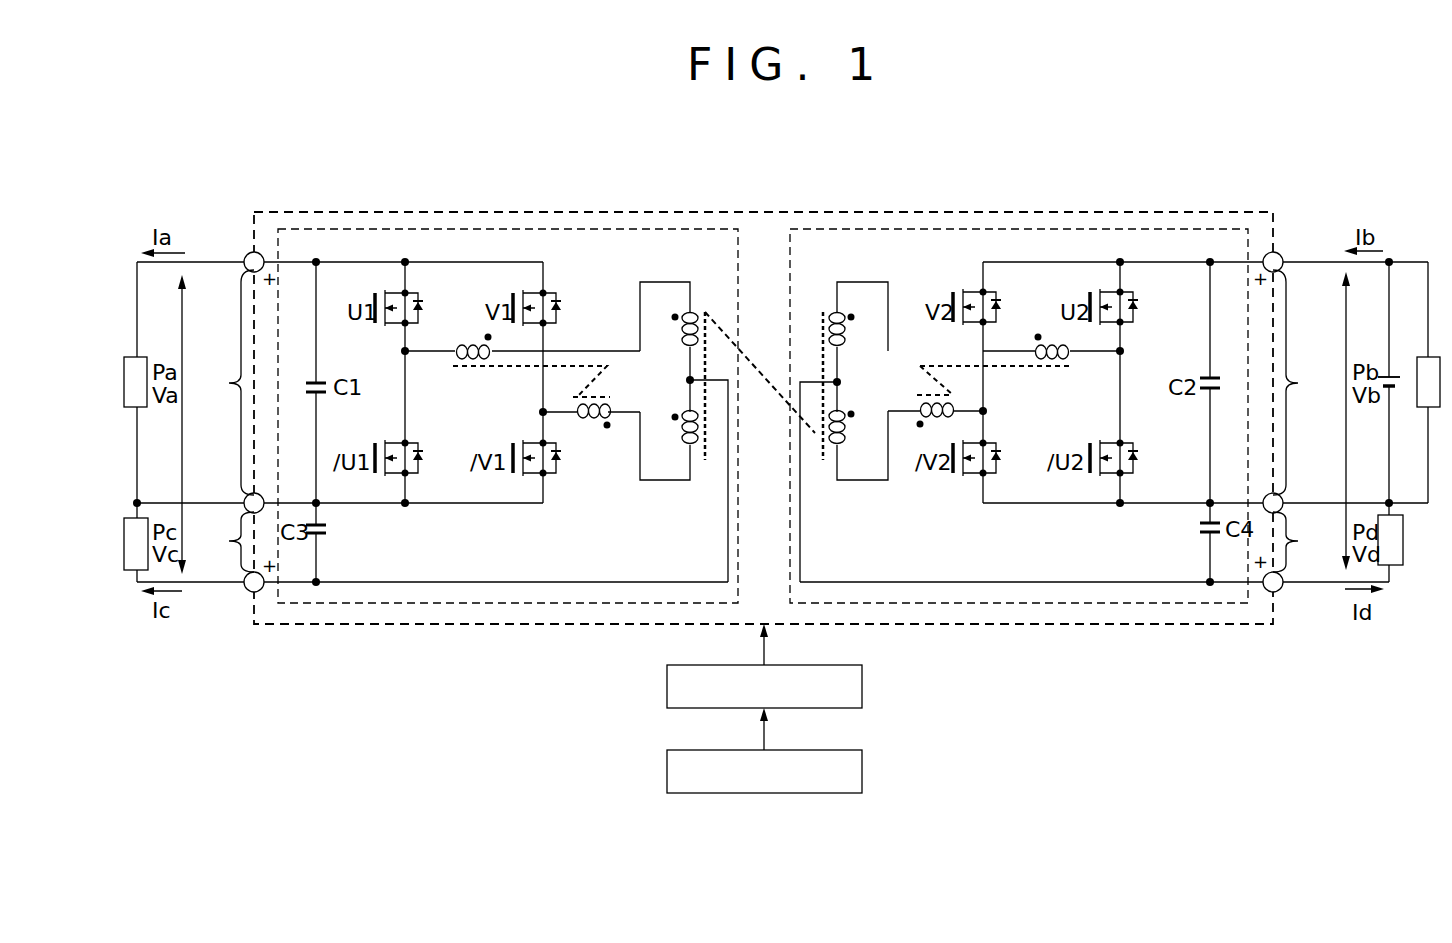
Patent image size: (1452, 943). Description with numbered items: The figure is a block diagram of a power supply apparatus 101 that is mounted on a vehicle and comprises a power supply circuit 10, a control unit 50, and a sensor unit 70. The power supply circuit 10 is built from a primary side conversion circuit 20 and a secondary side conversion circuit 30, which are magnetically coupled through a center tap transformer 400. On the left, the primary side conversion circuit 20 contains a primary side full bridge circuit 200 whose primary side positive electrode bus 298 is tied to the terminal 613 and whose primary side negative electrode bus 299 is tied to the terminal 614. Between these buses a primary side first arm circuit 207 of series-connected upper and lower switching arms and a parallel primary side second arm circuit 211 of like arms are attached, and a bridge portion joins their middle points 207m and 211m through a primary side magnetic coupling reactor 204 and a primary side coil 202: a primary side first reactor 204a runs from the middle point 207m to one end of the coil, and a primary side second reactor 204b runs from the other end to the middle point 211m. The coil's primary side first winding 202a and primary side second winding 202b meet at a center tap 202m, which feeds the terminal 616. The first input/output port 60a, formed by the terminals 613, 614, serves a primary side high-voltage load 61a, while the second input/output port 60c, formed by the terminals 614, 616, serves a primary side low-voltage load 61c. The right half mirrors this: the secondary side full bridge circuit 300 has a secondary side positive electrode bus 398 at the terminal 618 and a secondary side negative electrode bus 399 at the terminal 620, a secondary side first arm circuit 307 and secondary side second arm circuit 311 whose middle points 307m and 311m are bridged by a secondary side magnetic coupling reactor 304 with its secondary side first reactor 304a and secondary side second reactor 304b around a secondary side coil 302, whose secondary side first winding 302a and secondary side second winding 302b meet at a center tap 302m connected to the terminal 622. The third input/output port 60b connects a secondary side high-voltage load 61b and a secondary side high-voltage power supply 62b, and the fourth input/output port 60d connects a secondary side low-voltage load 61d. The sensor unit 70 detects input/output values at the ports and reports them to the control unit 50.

The power supply apparatus 101 is at (236, 164).
The power supply circuit 10 is at (1157, 212).
The primary side conversion circuit 20 is at (497, 212).
The secondary side conversion circuit 30 is at (1031, 212).
The primary side full bridge circuit 200 is at (589, 229).
The secondary side full bridge circuit 300 is at (936, 229).
The primary side coil 202 is at (660, 347).
The primary side first winding 202a is at (670, 335).
The primary side second winding 202b is at (682, 455).
The center tap 202m is at (688, 380).
The primary side magnetic coupling reactor 204 is at (522, 379).
The primary side first reactor 204a is at (462, 346).
The primary side second reactor 204b is at (600, 426).
The primary side first arm circuit 207 is at (391, 498).
The middle point of the primary side first arm circuit 207m is at (402, 351).
The primary side second arm circuit 211 is at (527, 500).
The middle point of the primary side second arm circuit 211m is at (541, 413).
The primary side positive electrode bus 298 is at (348, 262).
The primary side negative electrode bus 299 is at (345, 506).
The secondary side coil 302 is at (876, 347).
The secondary side first winding 302a is at (855, 335).
The secondary side second winding 302b is at (845, 455).
The center tap 302m is at (840, 382).
The secondary side magnetic coupling reactor 304 is at (1004, 396).
The secondary side first reactor 304a is at (1045, 346).
The secondary side second reactor 304b is at (918, 424).
The secondary side first arm circuit 307 is at (1087, 500).
The middle point of the secondary side first arm circuit 307m is at (1123, 350).
The secondary side second arm circuit 311 is at (959, 498).
The middle point of the secondary side second arm circuit 311m is at (985, 412).
The secondary side positive electrode bus 398 is at (1150, 262).
The secondary side negative electrode bus 399 is at (1176, 506).
The transformer 400 is at (763, 345).
The control unit 50 is at (863, 686).
The sensor unit 70 is at (863, 771).
The first input/output port 60a is at (216, 386).
The third input/output port 60b is at (1311, 386).
The second input/output port 60c is at (216, 538).
The fourth input/output port 60d is at (1311, 537).
The primary side high-voltage load 61a is at (142, 357).
The secondary side high-voltage load 61b is at (1421, 357).
The primary side low-voltage load 61c is at (128, 572).
The secondary side low-voltage load 61d is at (1393, 566).
The secondary side high-voltage power supply 62b is at (1386, 390).
The terminal 613 is at (246, 257).
The terminal 614 is at (257, 494).
The terminal 616 is at (252, 593).
The terminal 618 is at (1281, 255).
The terminal 620 is at (1266, 494).
The terminal 622 is at (1280, 592).